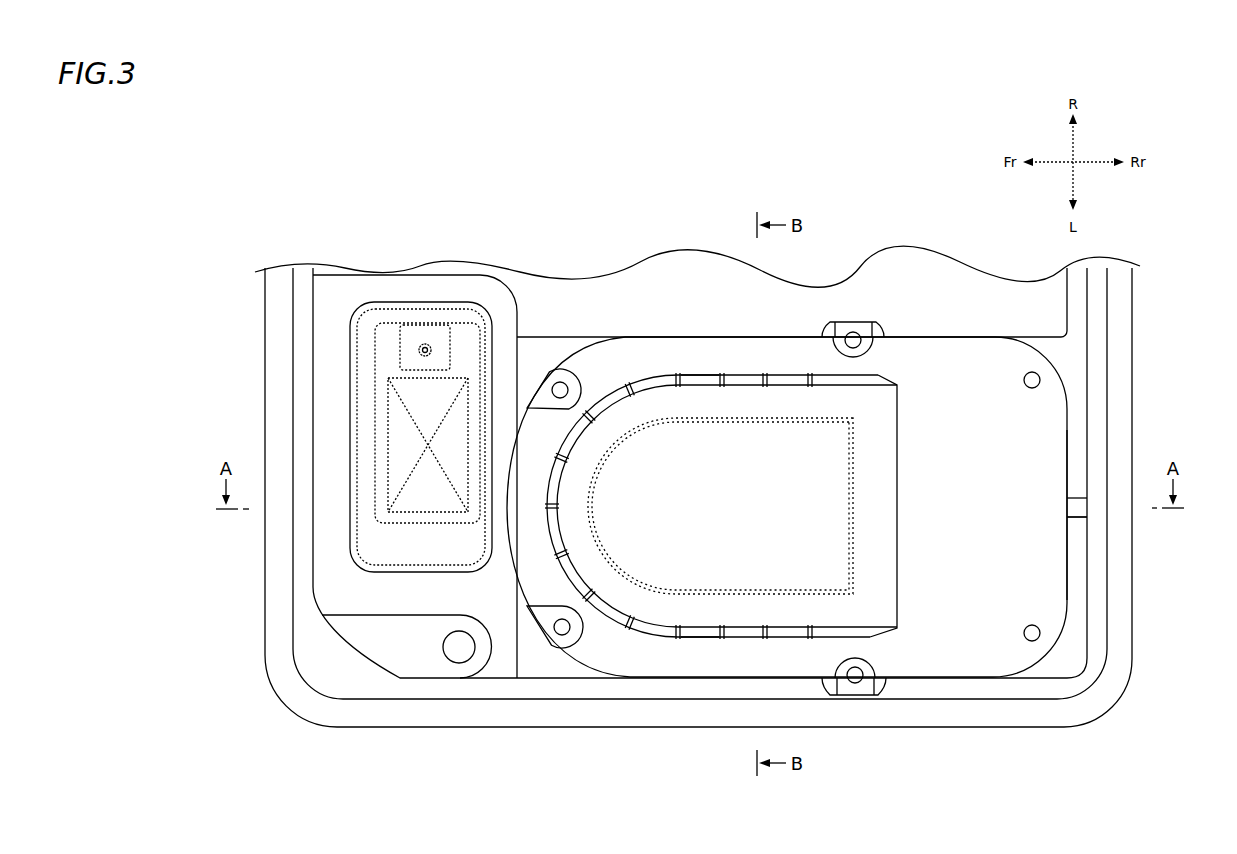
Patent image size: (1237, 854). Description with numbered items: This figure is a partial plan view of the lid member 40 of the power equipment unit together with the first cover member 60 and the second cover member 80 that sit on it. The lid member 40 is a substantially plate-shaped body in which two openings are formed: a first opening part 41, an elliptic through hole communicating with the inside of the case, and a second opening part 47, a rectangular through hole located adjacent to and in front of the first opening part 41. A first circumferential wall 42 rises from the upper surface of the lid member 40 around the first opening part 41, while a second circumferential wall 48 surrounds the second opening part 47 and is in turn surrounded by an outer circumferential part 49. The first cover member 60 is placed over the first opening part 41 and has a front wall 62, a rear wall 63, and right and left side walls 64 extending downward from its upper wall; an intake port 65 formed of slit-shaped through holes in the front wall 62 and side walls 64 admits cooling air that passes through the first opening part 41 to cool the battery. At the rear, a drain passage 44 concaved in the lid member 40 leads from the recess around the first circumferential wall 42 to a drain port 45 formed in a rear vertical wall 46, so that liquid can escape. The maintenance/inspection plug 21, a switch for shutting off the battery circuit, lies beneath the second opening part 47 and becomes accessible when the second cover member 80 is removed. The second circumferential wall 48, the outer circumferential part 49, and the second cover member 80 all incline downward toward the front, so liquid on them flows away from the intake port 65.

The maintenance/inspection plug 21 is at (430, 478).
The lid member 40 is at (1135, 304).
The first opening part 41 is at (793, 415).
The first circumferential wall 42 is at (850, 470).
The drain passage 44 is at (1077, 497).
The drain port 45 is at (1080, 507).
The rear vertical wall 46 is at (1088, 400).
The second opening part 47 is at (462, 322).
The second circumferential wall 48 is at (410, 300).
The outer circumferential part 49 is at (428, 587).
The first cover member 60 is at (735, 337).
The front wall 62 is at (549, 508).
The rear wall 63 is at (1068, 565).
The side wall 64 is at (690, 375).
The intake port 65 is at (573, 588).
The second cover member 80 is at (366, 298).